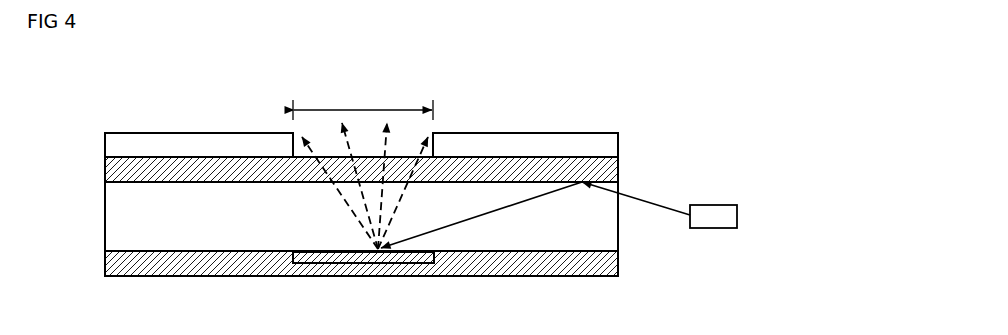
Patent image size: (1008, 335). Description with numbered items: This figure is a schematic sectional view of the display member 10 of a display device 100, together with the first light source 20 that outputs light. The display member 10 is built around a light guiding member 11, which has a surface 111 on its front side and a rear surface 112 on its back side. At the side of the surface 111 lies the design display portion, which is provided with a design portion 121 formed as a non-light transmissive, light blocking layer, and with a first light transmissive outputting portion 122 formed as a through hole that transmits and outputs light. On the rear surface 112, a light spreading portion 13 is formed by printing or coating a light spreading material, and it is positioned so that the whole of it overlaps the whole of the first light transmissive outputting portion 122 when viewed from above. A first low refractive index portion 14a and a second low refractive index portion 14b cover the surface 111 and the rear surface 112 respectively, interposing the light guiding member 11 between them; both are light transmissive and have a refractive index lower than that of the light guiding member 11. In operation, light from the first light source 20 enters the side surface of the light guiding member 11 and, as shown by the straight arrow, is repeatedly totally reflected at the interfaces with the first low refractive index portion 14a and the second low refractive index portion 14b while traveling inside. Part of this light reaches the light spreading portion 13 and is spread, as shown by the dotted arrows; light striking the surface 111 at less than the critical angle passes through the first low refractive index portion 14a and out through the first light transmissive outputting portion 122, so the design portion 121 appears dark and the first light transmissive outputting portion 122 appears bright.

The display member 10 is at (347, 173).
The display device 100 is at (762, 121).
The light guiding member 11 is at (124, 226).
The surface 111 is at (205, 184).
The rear surface 112 is at (514, 251).
The design portion 121 is at (200, 146).
The first light transmissive outputting portion 122 is at (354, 108).
The light spreading portion 13 is at (298, 251).
The first low refractive index portion 14a is at (128, 174).
The second low refractive index portion 14b is at (128, 263).
The first light source 20 is at (713, 218).